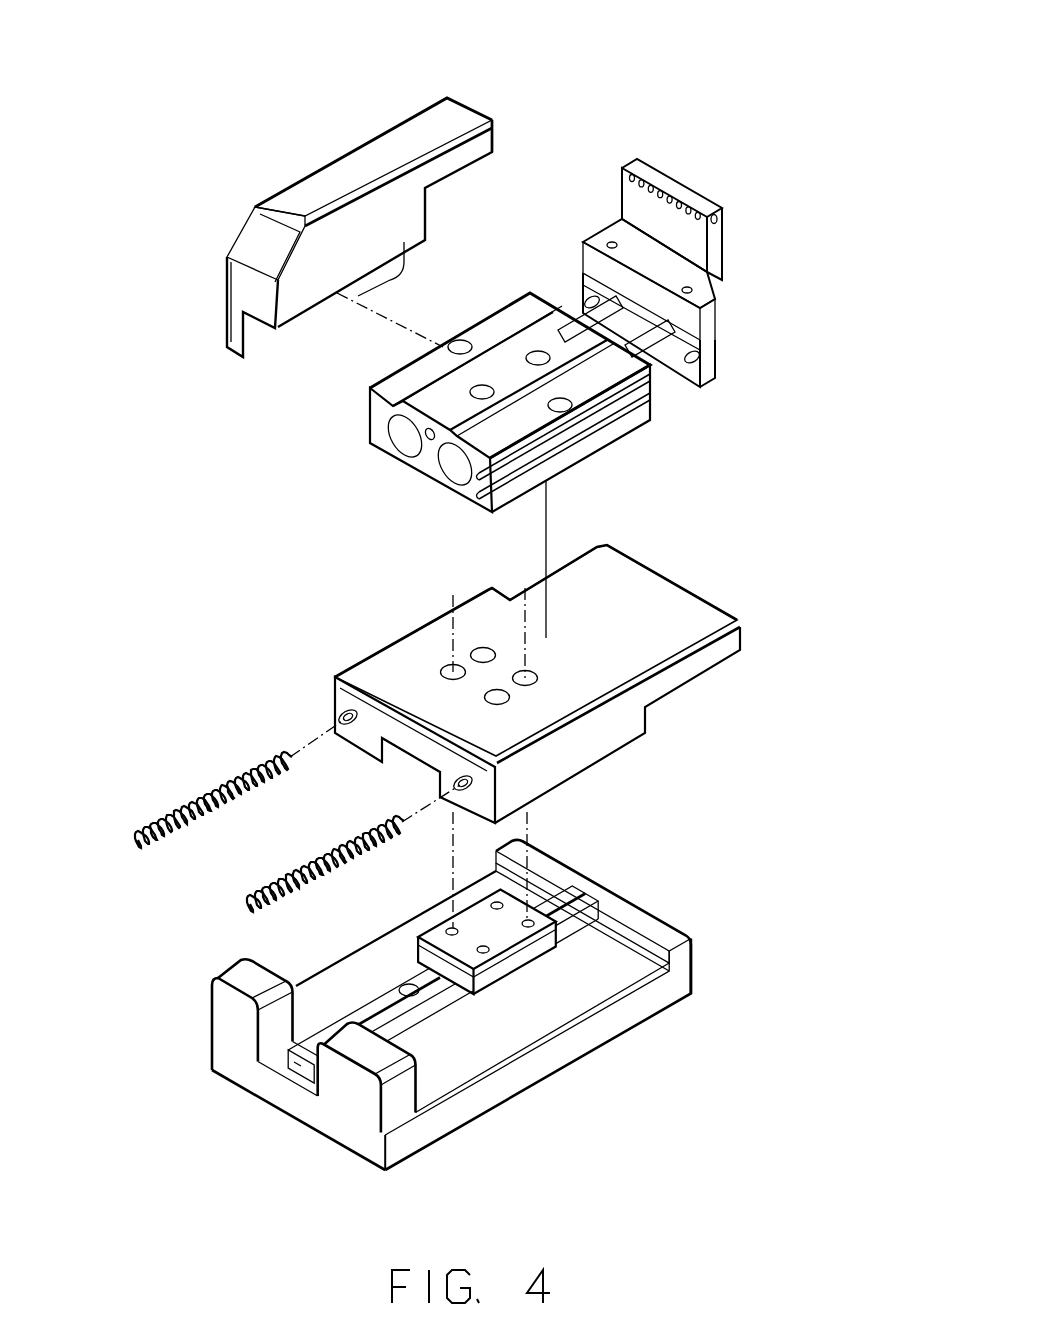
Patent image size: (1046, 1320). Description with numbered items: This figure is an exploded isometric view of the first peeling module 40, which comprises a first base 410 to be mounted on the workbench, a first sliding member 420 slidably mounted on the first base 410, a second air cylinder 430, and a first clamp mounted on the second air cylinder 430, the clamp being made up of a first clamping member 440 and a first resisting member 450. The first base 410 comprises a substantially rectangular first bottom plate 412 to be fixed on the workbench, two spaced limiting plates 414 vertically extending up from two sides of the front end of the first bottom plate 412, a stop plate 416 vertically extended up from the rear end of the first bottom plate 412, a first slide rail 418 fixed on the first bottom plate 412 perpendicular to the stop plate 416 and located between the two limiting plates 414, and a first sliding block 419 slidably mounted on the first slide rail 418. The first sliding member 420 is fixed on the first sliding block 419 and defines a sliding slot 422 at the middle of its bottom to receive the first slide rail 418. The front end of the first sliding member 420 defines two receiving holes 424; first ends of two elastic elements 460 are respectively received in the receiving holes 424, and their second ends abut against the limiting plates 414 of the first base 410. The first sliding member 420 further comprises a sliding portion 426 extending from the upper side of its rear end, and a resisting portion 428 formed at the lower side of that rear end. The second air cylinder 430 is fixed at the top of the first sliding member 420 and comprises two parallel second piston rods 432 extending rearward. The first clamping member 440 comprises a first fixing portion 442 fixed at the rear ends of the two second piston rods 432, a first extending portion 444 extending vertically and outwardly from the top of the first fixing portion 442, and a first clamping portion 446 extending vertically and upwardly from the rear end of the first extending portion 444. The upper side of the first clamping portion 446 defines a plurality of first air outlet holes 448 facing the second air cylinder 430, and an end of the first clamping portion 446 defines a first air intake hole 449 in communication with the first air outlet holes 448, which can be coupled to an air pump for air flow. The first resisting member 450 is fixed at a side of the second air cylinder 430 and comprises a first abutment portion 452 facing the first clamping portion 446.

The first peeling module 40 is at (338, 29).
The first base 410 is at (443, 1014).
The first bottom plate 412 is at (505, 1087).
The limiting plates 414 is at (228, 1016).
The stop plate 416 is at (645, 922).
The first slide rail 418 is at (303, 1047).
The first sliding block 419 is at (513, 958).
The first sliding member 420 is at (532, 736).
The sliding slot 422 is at (417, 763).
The receiving holes 424 is at (333, 718).
The sliding portion 426 is at (696, 671).
The resisting portion 428 is at (648, 722).
The second air cylinder 430 is at (528, 465).
The second piston rods 432 is at (655, 357).
The first clamping member 440 is at (702, 246).
The first fixing portion 442 is at (712, 338).
The first extending portion 444 is at (720, 284).
The first clamping portion 446 is at (653, 176).
The first air outlet holes 448 is at (622, 176).
The first air intake hole 449 is at (733, 219).
The first resisting member 450 is at (389, 202).
The first abutment portion 452 is at (485, 145).
The elastic elements 460 is at (177, 810).